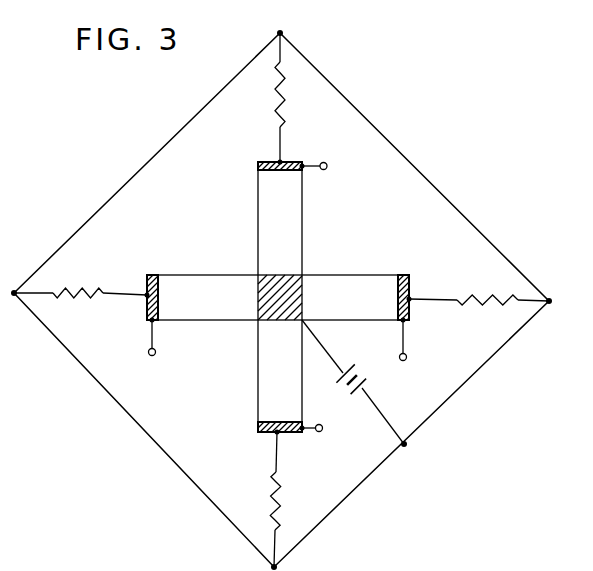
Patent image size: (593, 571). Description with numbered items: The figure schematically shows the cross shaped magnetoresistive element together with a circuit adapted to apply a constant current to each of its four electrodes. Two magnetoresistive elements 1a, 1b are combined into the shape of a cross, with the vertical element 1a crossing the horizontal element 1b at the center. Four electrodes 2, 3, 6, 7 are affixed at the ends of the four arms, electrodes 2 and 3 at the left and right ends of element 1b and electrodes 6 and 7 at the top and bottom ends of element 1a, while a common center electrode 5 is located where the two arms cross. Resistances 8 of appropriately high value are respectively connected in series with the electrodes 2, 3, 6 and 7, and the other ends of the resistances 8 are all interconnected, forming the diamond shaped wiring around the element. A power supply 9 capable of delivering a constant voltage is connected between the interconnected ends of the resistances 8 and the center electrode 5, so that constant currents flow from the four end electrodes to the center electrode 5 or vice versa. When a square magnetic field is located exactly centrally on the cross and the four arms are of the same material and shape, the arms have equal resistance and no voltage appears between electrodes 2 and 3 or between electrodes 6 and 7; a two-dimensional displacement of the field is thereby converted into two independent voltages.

The magnetoresistive element 1a is at (292, 230).
The magnetoresistive element 1b is at (211, 310).
The electrode 2 is at (148, 311).
The electrode 3 is at (408, 312).
The center electrode 5 is at (302, 276).
The electrode 6 is at (261, 162).
The electrode 7 is at (258, 424).
The resistance 8 is at (285, 83).
The power supply 9 is at (368, 388).